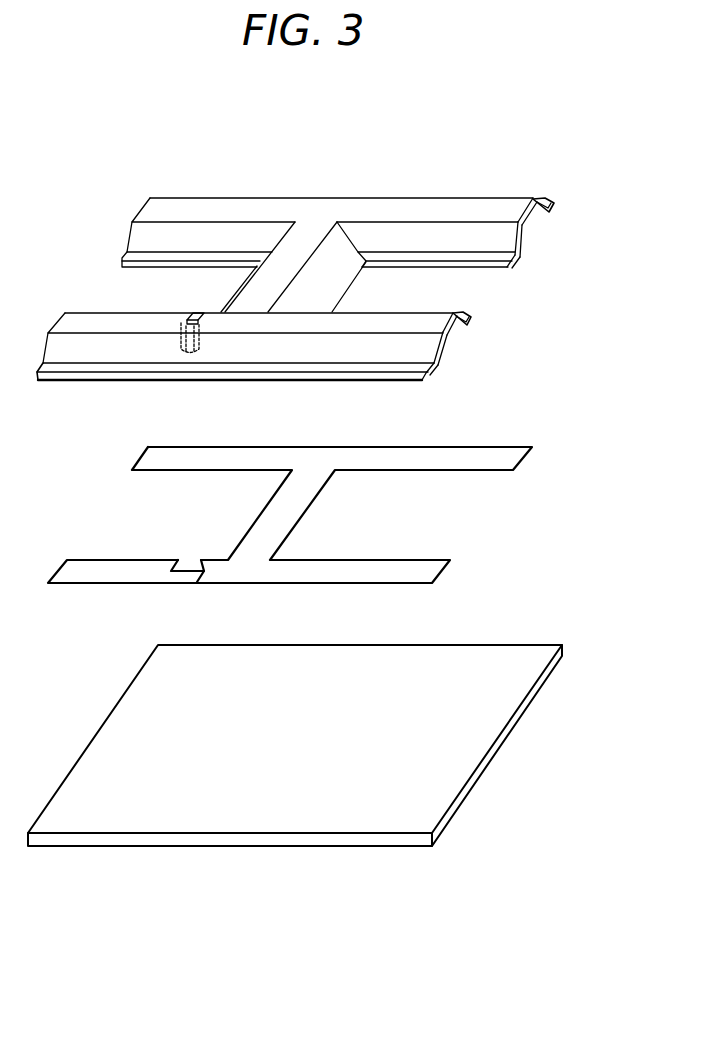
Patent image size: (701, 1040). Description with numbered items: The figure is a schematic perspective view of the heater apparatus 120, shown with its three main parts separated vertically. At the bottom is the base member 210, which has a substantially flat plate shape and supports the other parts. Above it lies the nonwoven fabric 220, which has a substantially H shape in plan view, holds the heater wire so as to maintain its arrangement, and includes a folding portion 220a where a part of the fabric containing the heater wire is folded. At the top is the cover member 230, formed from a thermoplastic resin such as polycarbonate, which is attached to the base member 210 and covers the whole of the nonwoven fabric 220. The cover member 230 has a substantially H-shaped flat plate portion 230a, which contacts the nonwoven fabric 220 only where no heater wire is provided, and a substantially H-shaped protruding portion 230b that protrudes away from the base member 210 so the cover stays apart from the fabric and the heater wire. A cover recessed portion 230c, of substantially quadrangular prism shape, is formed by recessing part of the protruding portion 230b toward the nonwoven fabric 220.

The heater apparatus 120 is at (89, 131).
The base member 210 is at (355, 838).
The nonwoven fabric 220 is at (355, 577).
The folding portion 220a is at (203, 540).
The cover member 230 is at (355, 377).
The flat plate portion 230a is at (273, 370).
The protruding portion 230b is at (421, 316).
The cover recessed portion 230c is at (205, 295).